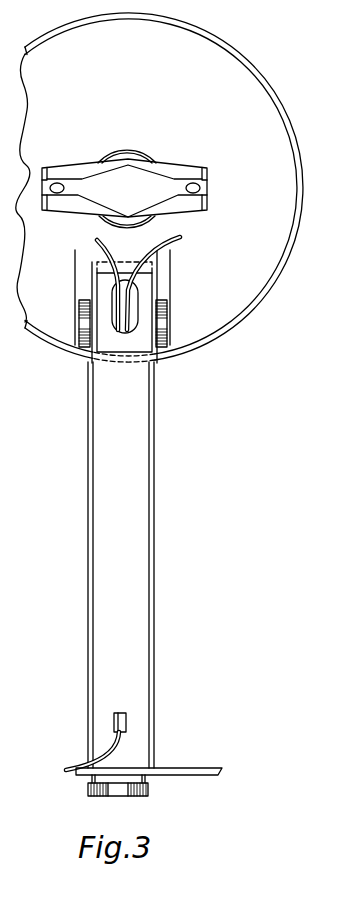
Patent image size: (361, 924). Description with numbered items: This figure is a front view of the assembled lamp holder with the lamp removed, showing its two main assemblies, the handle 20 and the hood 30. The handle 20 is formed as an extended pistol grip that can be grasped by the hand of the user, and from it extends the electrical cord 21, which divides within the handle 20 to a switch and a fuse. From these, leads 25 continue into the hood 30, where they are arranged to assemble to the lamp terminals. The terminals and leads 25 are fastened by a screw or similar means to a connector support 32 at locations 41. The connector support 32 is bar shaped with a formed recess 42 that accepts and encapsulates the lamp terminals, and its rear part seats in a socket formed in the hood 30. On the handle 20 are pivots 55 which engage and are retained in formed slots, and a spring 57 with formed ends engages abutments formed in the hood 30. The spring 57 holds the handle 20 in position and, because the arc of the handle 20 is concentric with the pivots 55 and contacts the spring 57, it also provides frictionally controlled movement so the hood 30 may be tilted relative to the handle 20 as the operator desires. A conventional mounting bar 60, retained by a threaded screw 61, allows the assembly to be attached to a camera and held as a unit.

The handle 20 is at (140, 462).
The electrical cord 21 is at (83, 760).
The leads 25 is at (97, 240).
The hood 30 is at (242, 59).
The connector support 32 is at (84, 165).
The locations 41 is at (57, 183).
The recess 42 is at (139, 177).
The pivots 55 is at (80, 318).
The spring 57 is at (148, 287).
The mounting bar 60 is at (203, 773).
The threaded screw 61 is at (150, 790).